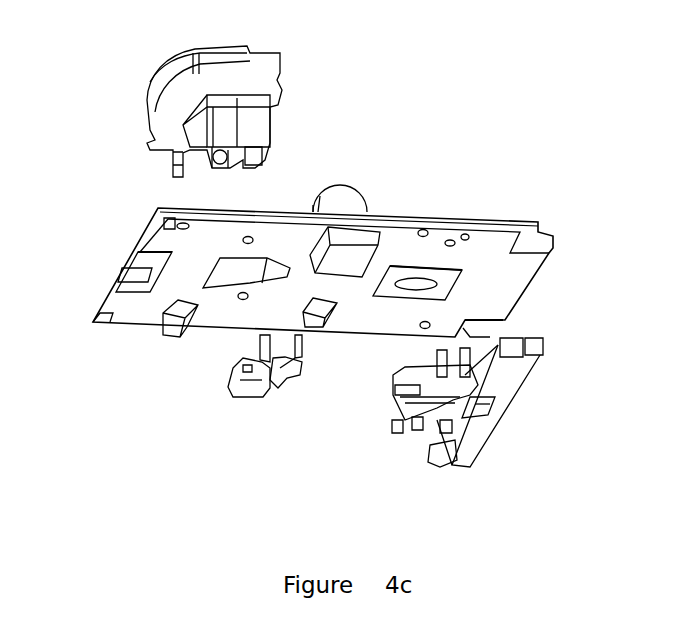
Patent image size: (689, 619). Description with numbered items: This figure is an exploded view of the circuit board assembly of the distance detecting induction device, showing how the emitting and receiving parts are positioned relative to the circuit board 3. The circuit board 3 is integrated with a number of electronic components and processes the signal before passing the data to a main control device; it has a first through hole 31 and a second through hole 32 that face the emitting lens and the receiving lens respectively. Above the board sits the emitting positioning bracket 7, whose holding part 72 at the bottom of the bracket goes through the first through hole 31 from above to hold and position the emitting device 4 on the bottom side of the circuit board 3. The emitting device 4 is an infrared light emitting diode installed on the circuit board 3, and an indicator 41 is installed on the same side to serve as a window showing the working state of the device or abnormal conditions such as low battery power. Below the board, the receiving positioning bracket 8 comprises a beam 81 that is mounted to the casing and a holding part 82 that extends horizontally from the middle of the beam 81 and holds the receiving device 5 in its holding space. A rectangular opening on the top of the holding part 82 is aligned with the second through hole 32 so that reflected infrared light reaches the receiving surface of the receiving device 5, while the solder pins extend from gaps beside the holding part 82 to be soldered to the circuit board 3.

The circuit board 3 is at (545, 195).
The first through hole 31 is at (253, 280).
The second through hole 32 is at (418, 282).
The emitting device 4 is at (253, 383).
The indicator 41 is at (283, 387).
The receiving device 5 is at (395, 392).
The emitting positioning bracket 7 is at (128, 82).
The holding part 72 is at (197, 163).
The receiving positioning bracket 8 is at (510, 408).
The beam 81 is at (507, 377).
The holding part 82 is at (398, 375).